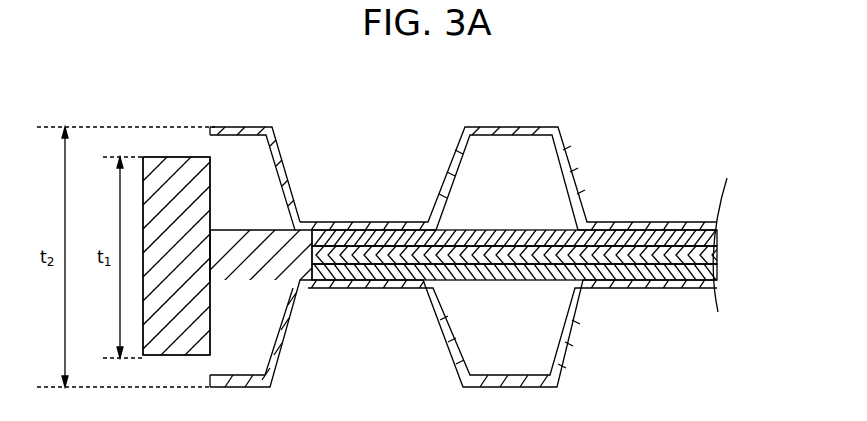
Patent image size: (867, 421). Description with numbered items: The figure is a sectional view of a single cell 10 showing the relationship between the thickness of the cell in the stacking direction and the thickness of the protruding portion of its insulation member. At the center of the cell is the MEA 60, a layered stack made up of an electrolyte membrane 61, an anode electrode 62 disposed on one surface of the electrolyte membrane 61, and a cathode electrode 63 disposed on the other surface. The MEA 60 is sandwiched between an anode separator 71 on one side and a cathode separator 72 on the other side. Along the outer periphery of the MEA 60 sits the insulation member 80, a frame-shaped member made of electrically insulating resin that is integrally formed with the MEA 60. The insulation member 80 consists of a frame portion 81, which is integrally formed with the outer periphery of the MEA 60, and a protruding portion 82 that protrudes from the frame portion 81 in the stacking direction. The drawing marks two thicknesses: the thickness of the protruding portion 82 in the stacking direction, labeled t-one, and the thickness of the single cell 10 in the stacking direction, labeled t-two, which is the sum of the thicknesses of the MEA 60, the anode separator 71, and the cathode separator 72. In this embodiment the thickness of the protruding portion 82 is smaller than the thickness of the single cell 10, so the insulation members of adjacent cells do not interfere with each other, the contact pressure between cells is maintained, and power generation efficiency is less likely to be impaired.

The single cell 10 is at (713, 108).
The MEA 60 is at (786, 207).
The electrolyte membrane 61 is at (716, 256).
The anode electrode 62 is at (716, 240).
The cathode electrode 63 is at (718, 272).
The anode separator 71 is at (647, 222).
The cathode separator 72 is at (643, 289).
The insulation member 80 is at (253, 70).
The frame portion 81 is at (233, 247).
The protruding portion 82 is at (173, 187).